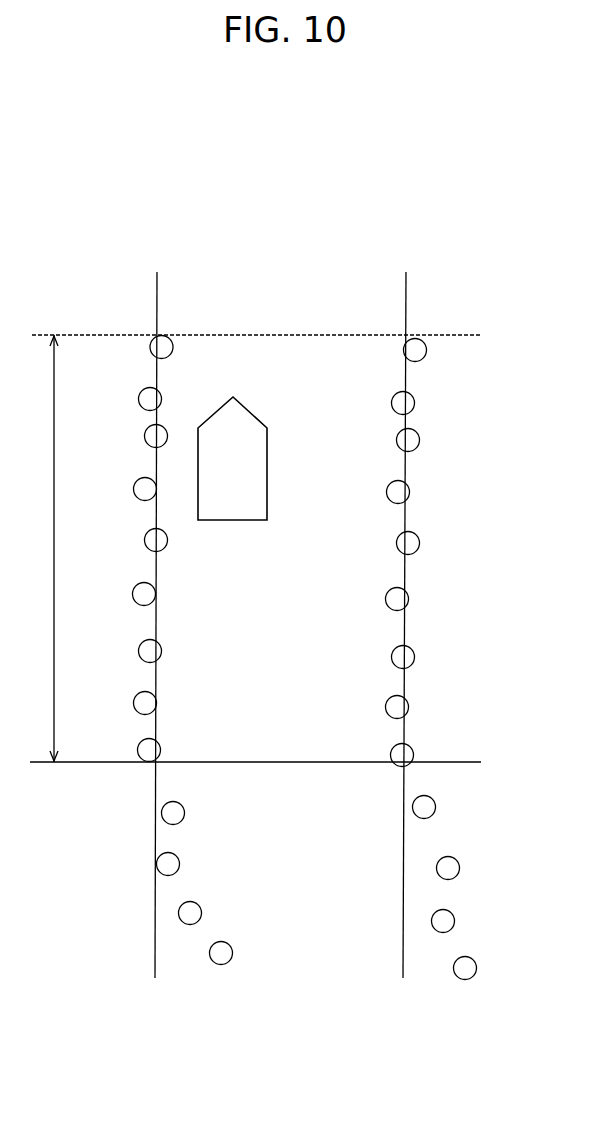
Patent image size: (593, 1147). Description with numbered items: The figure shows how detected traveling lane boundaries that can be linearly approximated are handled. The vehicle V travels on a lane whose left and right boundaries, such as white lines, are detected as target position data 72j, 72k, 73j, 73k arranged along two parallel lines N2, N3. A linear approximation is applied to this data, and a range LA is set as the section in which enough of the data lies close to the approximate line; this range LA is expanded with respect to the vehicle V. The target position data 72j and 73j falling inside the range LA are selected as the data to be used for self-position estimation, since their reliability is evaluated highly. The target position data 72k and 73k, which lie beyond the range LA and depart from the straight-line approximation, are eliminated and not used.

The target position data 72j is at (157, 705).
The target position data 73j is at (409, 709).
The target position data 72k is at (185, 813).
The target position data 73k is at (436, 808).
The second nozzle row N2 is at (155, 917).
The third nozzle row N3 is at (403, 918).
The vehicle V is at (267, 452).
The range which can be approximated with straight lines LA is at (39, 548).